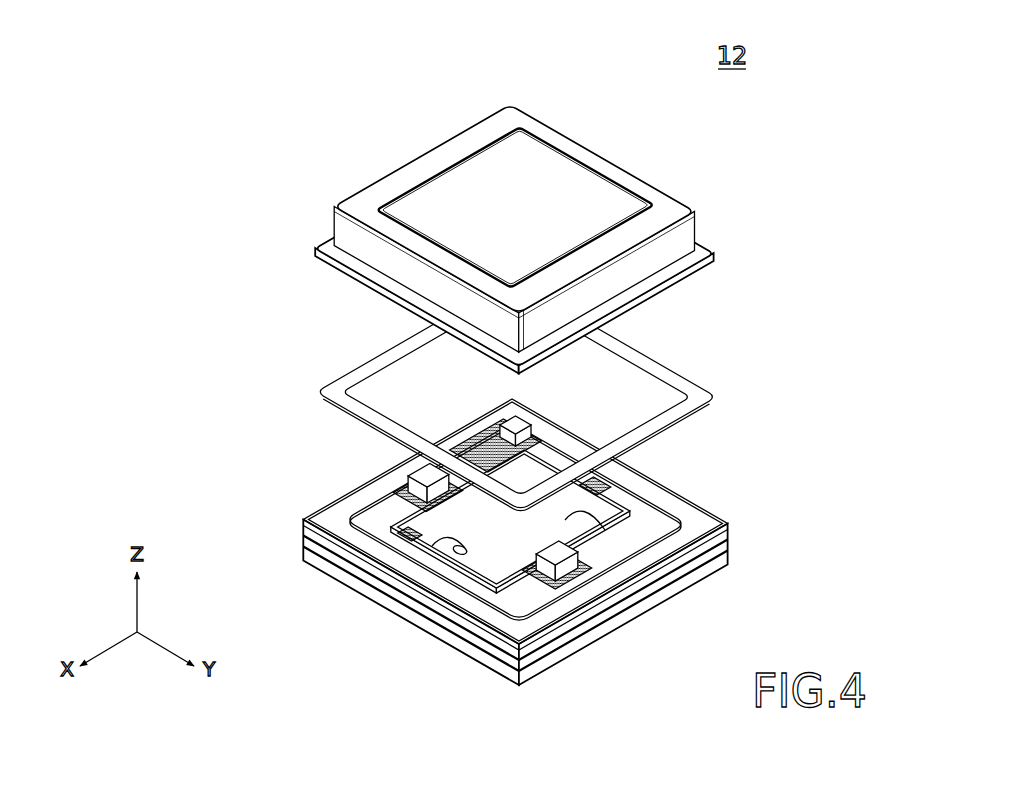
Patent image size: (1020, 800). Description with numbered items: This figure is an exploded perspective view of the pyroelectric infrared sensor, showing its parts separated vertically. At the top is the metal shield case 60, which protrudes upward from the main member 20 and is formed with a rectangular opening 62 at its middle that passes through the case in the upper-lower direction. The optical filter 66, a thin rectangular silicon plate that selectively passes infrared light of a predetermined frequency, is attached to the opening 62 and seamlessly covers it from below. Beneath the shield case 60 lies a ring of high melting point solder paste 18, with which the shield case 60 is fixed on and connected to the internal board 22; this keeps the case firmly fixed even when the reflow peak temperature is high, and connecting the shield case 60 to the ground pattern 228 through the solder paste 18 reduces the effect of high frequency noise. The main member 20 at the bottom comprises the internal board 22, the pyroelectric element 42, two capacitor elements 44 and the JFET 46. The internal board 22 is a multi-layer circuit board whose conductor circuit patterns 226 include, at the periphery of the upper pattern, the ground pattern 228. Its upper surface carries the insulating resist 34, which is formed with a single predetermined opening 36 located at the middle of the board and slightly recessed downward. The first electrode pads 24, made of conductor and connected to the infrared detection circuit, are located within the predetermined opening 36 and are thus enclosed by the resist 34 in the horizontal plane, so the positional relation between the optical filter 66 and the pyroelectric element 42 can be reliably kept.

The high melting point solder paste 18 is at (338, 393).
The main member 20 is at (733, 529).
The internal board 22 is at (303, 537).
The first electrode pads 24 is at (595, 487).
The resist 34 is at (385, 505).
The predetermined opening 36 is at (407, 530).
The pyroelectric element 42 is at (610, 523).
The capacitor elements 44 is at (425, 478).
The junction field effect transistor (JFET) 46 is at (490, 428).
The shield case 60 is at (334, 203).
The opening 62 is at (440, 215).
The optical filter 66 is at (508, 182).
The circuit patterns 226 is at (463, 524).
The ground pattern 228 is at (335, 520).